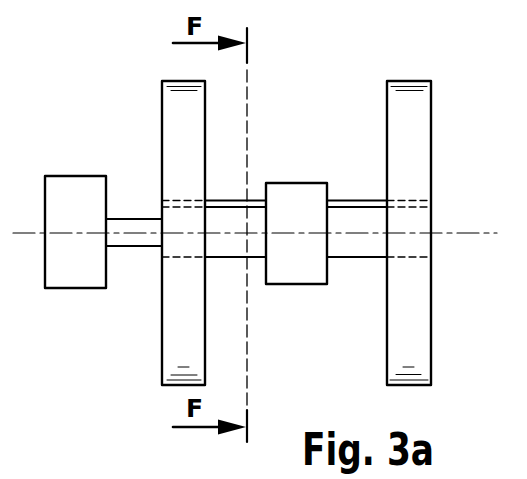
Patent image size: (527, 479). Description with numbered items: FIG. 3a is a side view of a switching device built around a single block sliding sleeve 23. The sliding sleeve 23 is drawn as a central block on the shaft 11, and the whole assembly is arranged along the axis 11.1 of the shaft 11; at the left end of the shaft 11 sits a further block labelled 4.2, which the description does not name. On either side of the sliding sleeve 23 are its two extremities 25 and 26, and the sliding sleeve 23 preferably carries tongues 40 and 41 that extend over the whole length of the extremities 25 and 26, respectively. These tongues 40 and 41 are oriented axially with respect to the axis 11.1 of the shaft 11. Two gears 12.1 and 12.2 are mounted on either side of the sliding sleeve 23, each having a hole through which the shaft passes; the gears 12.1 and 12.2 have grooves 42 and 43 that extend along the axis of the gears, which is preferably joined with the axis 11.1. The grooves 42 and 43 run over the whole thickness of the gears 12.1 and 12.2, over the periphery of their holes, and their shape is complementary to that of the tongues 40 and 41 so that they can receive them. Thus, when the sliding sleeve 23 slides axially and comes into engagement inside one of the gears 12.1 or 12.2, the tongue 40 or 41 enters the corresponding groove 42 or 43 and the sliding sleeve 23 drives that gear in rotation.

The drive motor 4.2 is at (82, 280).
The shaft 11 is at (135, 250).
The axis 11.1 is at (464, 233).
The gear 12.1 is at (173, 105).
The gear 12.2 is at (422, 104).
The sliding sleeve 23 is at (297, 285).
The extremity 25 is at (228, 260).
The extremity 26 is at (361, 258).
The tongue 40 is at (230, 201).
The tongue 41 is at (361, 203).
The groove 42 is at (185, 202).
The groove 43 is at (411, 202).